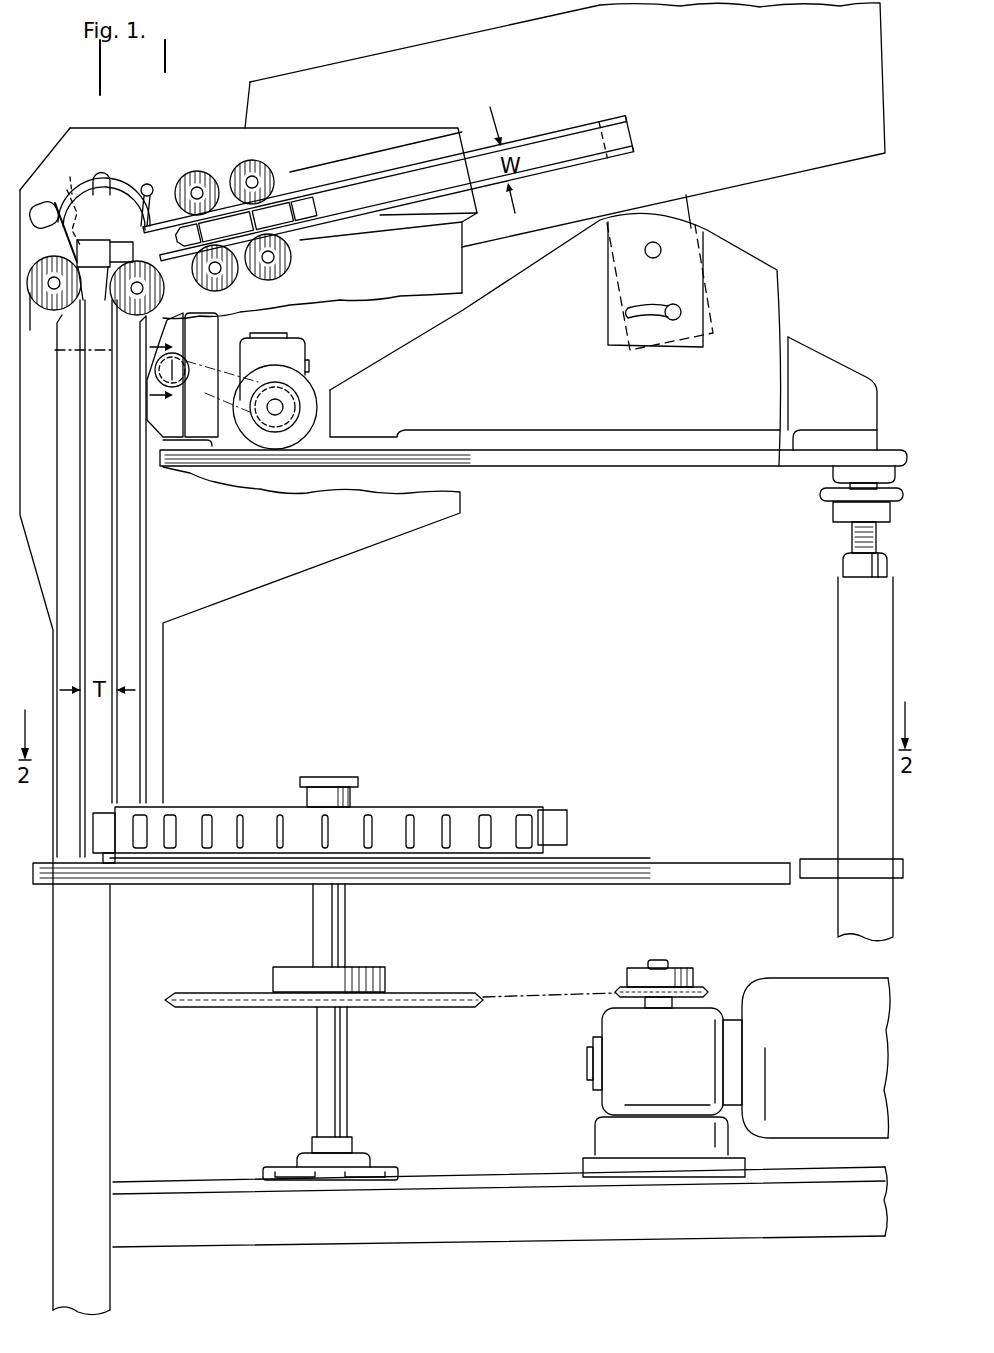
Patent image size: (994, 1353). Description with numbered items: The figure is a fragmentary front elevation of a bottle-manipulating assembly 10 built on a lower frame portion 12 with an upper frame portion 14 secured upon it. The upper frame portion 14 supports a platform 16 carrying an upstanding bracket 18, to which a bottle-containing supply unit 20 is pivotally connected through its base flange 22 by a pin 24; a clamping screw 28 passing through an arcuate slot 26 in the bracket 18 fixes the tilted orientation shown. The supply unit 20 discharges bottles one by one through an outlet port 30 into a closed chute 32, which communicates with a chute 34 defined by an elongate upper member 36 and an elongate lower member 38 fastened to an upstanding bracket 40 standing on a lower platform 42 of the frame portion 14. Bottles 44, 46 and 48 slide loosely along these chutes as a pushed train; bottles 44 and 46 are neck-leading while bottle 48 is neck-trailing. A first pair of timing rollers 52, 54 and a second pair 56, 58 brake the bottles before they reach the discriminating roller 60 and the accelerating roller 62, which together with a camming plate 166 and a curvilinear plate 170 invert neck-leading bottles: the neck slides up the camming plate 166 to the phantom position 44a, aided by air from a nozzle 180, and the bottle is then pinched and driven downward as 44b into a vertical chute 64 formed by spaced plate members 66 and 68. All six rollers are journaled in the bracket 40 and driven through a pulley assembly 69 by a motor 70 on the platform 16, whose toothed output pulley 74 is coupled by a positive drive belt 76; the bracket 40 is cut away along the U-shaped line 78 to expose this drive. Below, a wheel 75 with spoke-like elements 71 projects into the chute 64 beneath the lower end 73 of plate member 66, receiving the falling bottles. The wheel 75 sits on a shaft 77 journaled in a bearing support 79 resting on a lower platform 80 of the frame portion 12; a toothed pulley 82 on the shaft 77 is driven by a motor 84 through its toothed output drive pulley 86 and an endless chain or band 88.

The bottle-manipulating assembly 10 is at (813, 255).
The lower frame portion 12 is at (120, 1077).
The upper frame portion 14 is at (826, 618).
The platform 16 is at (807, 460).
The upstanding bracket 18 is at (813, 353).
The bottle-containing or supply unit 20 is at (771, 100).
The base flange 22 is at (693, 207).
The pin 24 is at (663, 248).
The arcuate slot 26 is at (633, 318).
The clamping screw 28 is at (677, 304).
The outlet port 30 is at (635, 118).
The chute or conduit 32 is at (533, 145).
The chute 34 is at (402, 168).
The elongate upper member 36 is at (367, 163).
The elongate lower member 38 is at (387, 230).
The upstanding bracket 40 is at (32, 519).
The lower platform 42 is at (680, 868).
The bottle 44 is at (110, 240).
The bottle (phantom disposition) 44a is at (70, 176).
The bottle (phantom disposition) 44b is at (55, 350).
The bottle 46 is at (218, 213).
The bottle 48 is at (278, 200).
The timing roller 52 is at (252, 160).
The timing roller 54 is at (292, 261).
The timing roller 56 is at (197, 171).
The timing roller 58 is at (234, 274).
The discriminating roller 60 is at (42, 303).
The accelerating roller 62 is at (165, 291).
The vertically oriented chute 64 is at (88, 578).
The plate member 66 is at (125, 583).
The plate member 68 is at (67, 645).
The pulley assembly 69 is at (182, 358).
The drive means 70 is at (310, 386).
The spoke-like elements 71 is at (440, 823).
The lower end 73 is at (143, 803).
The toothed output pulley 74 is at (300, 411).
The wheel 75 is at (508, 813).
The positive drive belt 76 is at (203, 392).
The shaft 77 is at (345, 918).
The cut-away line 78 is at (393, 297).
The bearing support 79 is at (310, 1147).
The lower platform 80 is at (479, 1183).
The toothed pulley 82 is at (200, 996).
The drive means 84 is at (798, 973).
The toothed output drive pulley 86 is at (703, 987).
The endless chain or band 88 is at (523, 992).
The camming plate 166 is at (45, 222).
The curvilinear plate 170 is at (60, 186).
The nozzle 180 is at (148, 184).